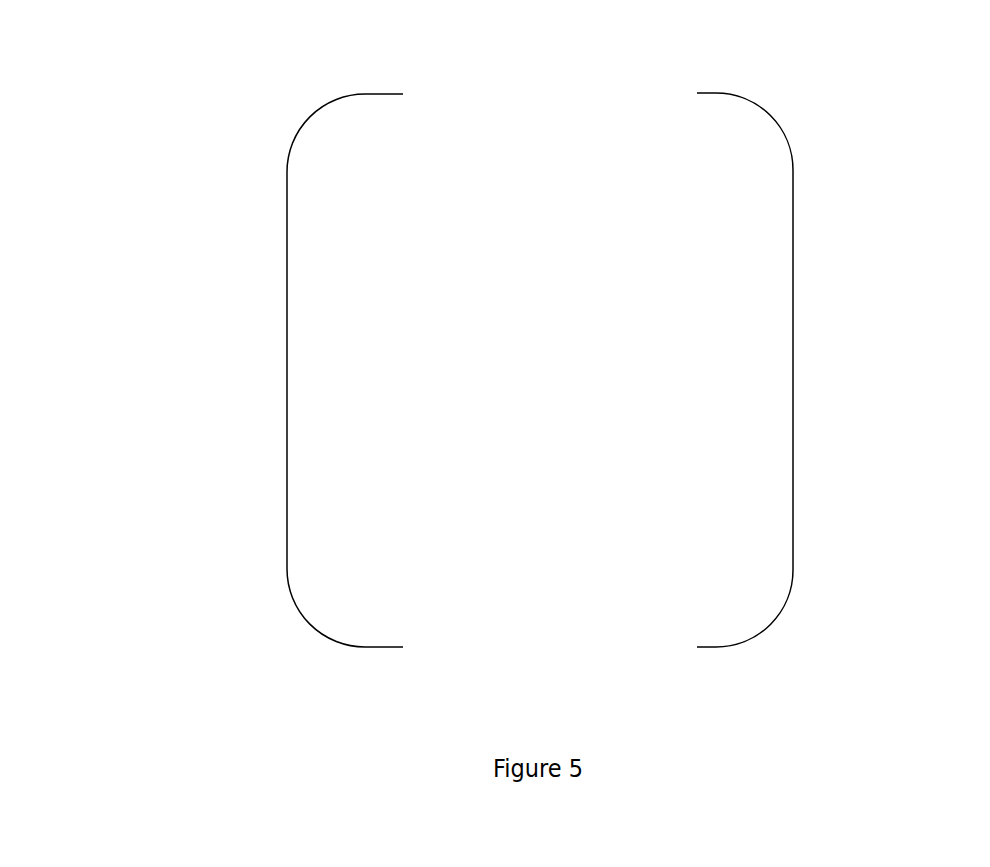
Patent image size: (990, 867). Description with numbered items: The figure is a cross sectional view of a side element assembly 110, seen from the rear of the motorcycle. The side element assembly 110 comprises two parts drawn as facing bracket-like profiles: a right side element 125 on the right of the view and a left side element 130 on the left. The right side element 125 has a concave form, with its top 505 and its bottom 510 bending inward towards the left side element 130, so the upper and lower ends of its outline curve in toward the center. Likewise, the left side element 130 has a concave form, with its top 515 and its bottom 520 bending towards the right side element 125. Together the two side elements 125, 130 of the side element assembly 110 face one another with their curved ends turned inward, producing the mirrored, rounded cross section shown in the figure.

The side element assembly 110 is at (218, 723).
The right side element 125 is at (793, 258).
The left side element 130 is at (288, 302).
The top of the right side element 505 is at (760, 110).
The bottom of the right side element 510 is at (777, 615).
The top of the left side element 515 is at (318, 117).
The bottom of the left side element 520 is at (305, 616).